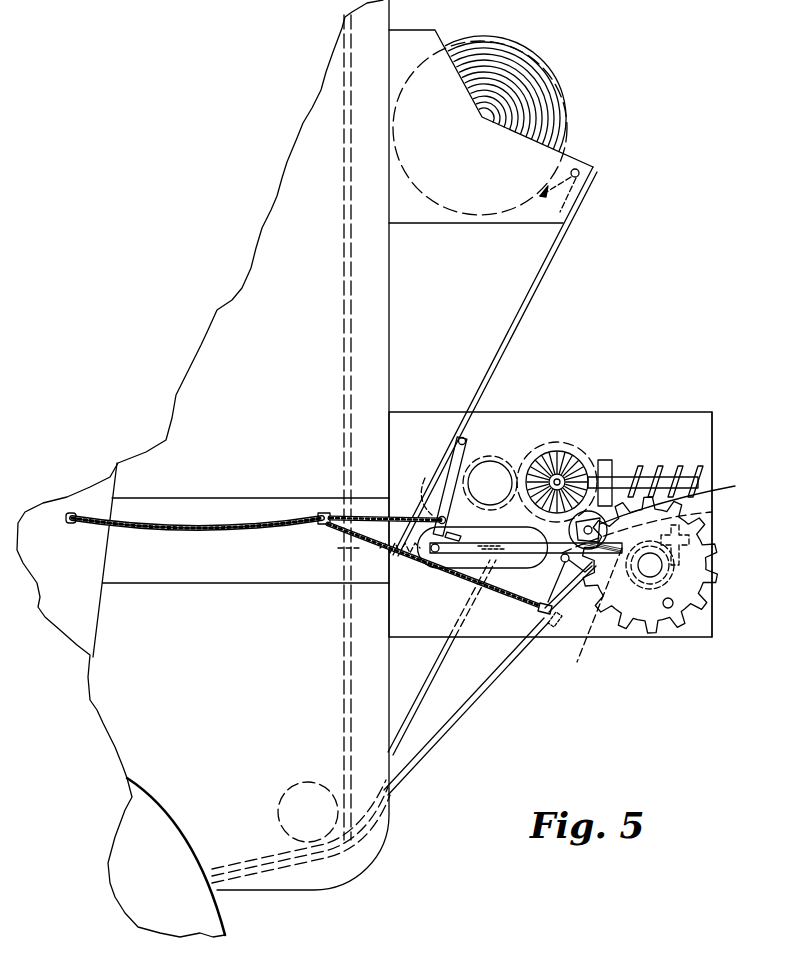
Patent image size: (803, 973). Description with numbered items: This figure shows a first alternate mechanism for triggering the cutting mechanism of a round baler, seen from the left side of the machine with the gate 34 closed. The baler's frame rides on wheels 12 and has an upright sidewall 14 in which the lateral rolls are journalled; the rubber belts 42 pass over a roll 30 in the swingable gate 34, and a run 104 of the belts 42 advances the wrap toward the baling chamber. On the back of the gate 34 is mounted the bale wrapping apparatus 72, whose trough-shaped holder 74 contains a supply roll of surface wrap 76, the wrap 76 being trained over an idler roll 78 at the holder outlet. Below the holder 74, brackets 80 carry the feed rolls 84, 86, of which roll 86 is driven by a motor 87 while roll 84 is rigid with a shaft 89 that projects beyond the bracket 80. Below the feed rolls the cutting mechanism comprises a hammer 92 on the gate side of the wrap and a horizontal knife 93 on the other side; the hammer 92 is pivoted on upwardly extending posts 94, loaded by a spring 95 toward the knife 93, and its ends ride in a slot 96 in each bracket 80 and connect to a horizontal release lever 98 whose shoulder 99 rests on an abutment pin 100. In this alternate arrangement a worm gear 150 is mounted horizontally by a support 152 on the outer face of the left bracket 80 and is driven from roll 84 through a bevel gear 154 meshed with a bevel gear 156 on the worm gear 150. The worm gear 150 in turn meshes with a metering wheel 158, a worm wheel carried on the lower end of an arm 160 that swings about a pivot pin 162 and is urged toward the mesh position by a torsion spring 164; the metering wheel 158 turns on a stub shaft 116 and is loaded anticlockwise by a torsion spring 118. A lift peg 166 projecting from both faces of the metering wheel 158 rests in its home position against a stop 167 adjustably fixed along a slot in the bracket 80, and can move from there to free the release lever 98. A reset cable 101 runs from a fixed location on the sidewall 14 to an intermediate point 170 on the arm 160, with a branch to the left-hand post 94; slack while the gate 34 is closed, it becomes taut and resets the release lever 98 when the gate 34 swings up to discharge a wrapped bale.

The wheels 12 is at (222, 925).
The upright fore-and-aft extending wall 14 is at (68, 587).
The roll 30 is at (300, 782).
The swingable gate 34 is at (230, 652).
The rubber belts 42 is at (344, 290).
The bale wrapping apparatus 72 is at (604, 163).
The trough-shaped holder 74 is at (420, 213).
The surface wrap 76 is at (545, 88).
The idler roll 78 is at (578, 168).
The brackets 80 is at (418, 425).
The feed roll 84 is at (545, 452).
The feed roll 86 is at (436, 507).
The motor 87 is at (502, 494).
The shaft 89 is at (570, 472).
The hammer 92 is at (442, 560).
The horizontal knife 93 is at (520, 558).
The upwardly extending posts 94 is at (432, 490).
The spring 95 is at (337, 549).
The slot 96 is at (458, 598).
The horizontal release lever 98 is at (492, 582).
The shoulder 99 is at (533, 612).
The abutment pin 100 is at (556, 632).
The reset cable 101 is at (216, 536).
The run of the belts 104 is at (252, 860).
The stub shaft 116 is at (645, 640).
The torsion spring 118 is at (712, 570).
The worm gear 150 is at (710, 448).
The support 152 is at (610, 468).
The bevel gear 154 is at (548, 460).
The bevel gear 156 is at (592, 495).
The metering wheel 158 is at (622, 640).
The arm 160 is at (678, 505).
The pivot pin 162 is at (615, 512).
The torsion spring 164 is at (640, 490).
The lift peg 166 is at (672, 610).
The stop 167 is at (700, 546).
The intermediate point 170 is at (600, 575).